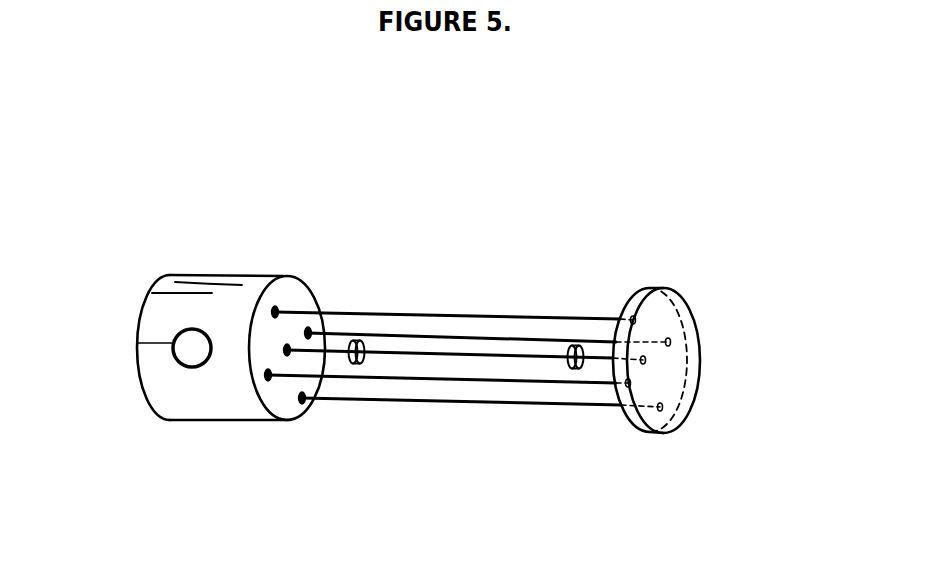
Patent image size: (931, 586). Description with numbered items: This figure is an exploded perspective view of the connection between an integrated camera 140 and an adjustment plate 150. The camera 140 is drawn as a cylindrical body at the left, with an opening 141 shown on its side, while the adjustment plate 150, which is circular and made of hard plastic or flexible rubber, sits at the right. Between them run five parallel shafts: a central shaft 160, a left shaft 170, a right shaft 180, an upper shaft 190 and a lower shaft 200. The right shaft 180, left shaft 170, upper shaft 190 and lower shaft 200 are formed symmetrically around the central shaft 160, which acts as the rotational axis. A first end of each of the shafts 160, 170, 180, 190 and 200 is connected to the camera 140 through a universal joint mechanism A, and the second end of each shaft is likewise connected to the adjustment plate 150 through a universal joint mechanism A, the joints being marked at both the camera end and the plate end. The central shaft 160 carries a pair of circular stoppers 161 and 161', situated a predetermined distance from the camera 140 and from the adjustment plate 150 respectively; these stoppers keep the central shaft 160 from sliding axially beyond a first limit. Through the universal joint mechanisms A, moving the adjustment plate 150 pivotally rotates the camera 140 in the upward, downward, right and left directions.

The camera 140 is at (202, 224).
The hole in header 141 is at (178, 345).
The adjustment plate 150 is at (637, 291).
The central shaft 160 is at (412, 351).
The circular stopper 161 is at (365, 434).
The circular stopper 161' is at (588, 440).
The left shaft 170 is at (450, 380).
The right shaft 180 is at (373, 333).
The upper shaft 190 is at (323, 311).
The lower shaft 200 is at (503, 402).
The universal joint mechanism A is at (489, 370).